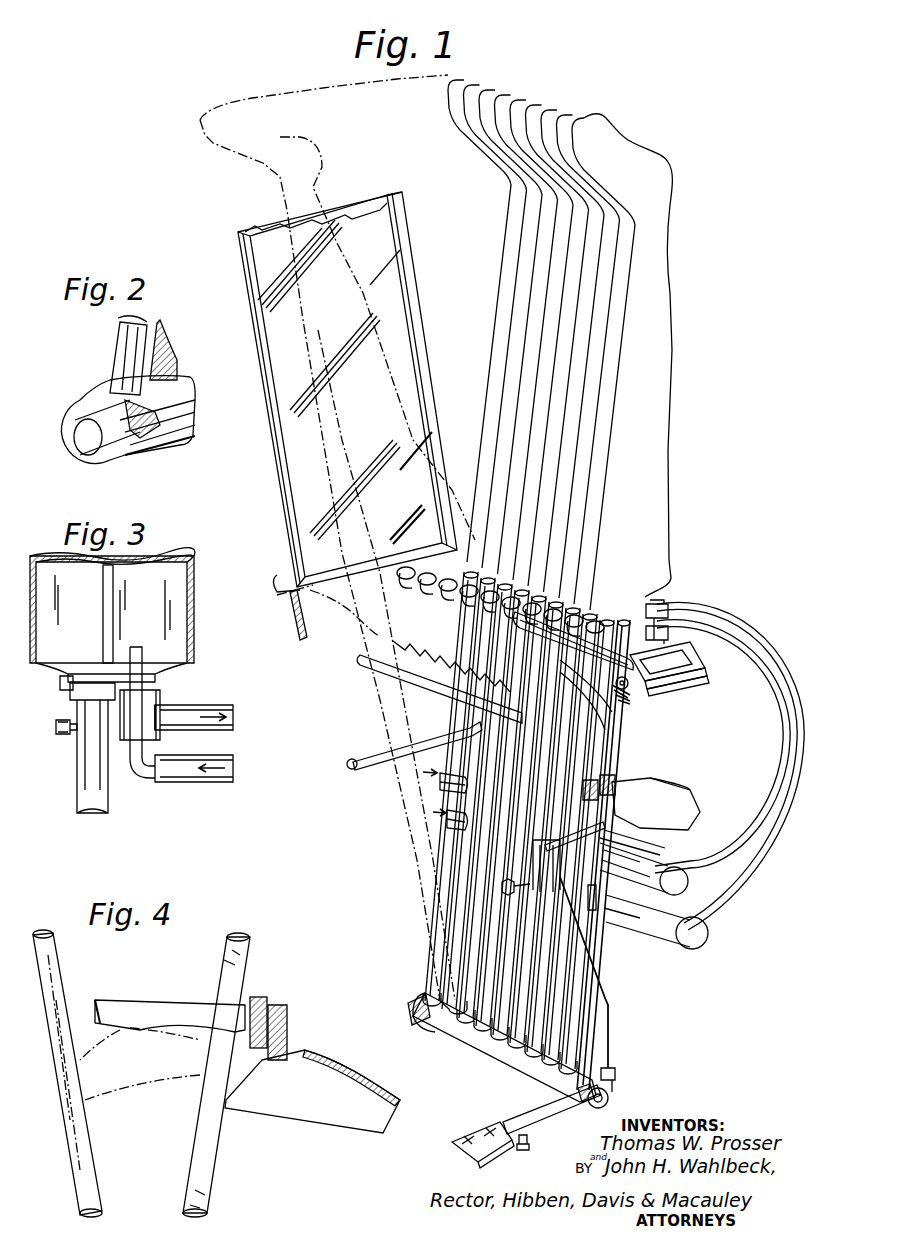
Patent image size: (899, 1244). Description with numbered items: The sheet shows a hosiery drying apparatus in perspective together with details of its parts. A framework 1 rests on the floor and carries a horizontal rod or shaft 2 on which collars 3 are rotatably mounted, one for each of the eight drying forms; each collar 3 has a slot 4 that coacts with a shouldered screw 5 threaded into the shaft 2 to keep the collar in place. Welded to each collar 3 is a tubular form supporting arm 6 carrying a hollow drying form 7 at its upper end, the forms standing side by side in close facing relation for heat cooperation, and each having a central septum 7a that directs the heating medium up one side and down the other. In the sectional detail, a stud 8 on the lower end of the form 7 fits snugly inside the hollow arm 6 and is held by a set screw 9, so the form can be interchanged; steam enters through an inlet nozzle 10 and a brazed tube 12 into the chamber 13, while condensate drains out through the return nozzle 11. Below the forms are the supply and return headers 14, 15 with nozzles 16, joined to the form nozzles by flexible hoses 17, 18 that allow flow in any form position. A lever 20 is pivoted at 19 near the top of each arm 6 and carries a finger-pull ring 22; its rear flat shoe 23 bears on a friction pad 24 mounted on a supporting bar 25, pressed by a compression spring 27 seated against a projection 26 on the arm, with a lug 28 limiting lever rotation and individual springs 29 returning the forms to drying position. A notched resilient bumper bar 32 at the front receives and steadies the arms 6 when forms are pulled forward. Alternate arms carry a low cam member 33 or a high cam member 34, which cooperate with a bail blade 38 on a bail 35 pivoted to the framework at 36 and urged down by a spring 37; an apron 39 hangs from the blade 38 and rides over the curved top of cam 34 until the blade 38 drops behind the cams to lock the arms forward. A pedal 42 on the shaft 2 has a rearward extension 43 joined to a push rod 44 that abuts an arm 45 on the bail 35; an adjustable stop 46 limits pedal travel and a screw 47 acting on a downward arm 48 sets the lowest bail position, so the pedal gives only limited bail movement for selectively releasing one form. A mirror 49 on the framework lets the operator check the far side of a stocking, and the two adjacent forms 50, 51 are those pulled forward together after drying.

In FIG. 1, the framework 1 is at (608, 1102).
In FIG. 1, the rod or shaft 2 is at (620, 1090).
In FIG. 1, the collar 3 is at (545, 1110).
In FIG. 2, the slot 4 is at (183, 392).
In FIG. 2, the shouldered screw 5 is at (165, 440).
In FIG. 1, the form supporting arm 6 is at (596, 958).
In FIG. 4, the form supporting arm 6 is at (215, 1148).
In FIG. 1, the drying form 7 is at (668, 540).
In FIG. 3, the drying form 7 is at (194, 625).
In FIG. 3, the septum 7a is at (62, 684).
In FIG. 3, the stud 8 is at (78, 760).
In FIG. 3, the set screw 9 is at (56, 727).
In FIG. 3, the inlet nozzle 10 is at (162, 783).
In FIG. 3, the return nozzle 11 is at (180, 705).
In FIG. 3, the tube 12 is at (138, 648).
In FIG. 3, the chamber 13 is at (194, 580).
In FIG. 1, the supply header 14 is at (660, 855).
In FIG. 1, the return header 15 is at (660, 925).
In FIG. 1, the nozzle 16 is at (683, 878).
In FIG. 1, the flexible conduit or hose 17 is at (778, 762).
In FIG. 1, the flexible conduit or hose 18 is at (800, 766).
In FIG. 1, the pivot 19 is at (615, 715).
In FIG. 1, the lever 20 is at (607, 732).
In FIG. 1, the loop or ring 22 is at (518, 650).
In FIG. 1, the flat shoe 23 is at (668, 660).
In FIG. 1, the pad 24 is at (700, 672).
In FIG. 1, the supporting bar 25 is at (690, 690).
In FIG. 1, the projection 26 is at (665, 640).
In FIG. 1, the compression spring 27 is at (700, 656).
In FIG. 1, the lug 28 is at (632, 692).
In FIG. 1, the spring 29 is at (665, 700).
In FIG. 1, the bumper bar 32 is at (452, 700).
In FIG. 1, the cam member 33 is at (685, 810).
In FIG. 4, the cam member 33 is at (340, 1120).
In FIG. 1, the cam member 34 is at (672, 788).
In FIG. 4, the cam member 34 is at (396, 1096).
In FIG. 1, the bail 35 is at (370, 767).
In FIG. 4, the bail 35 is at (165, 1005).
In FIG. 1, the bail pivot 36 is at (352, 758).
In FIG. 1, the spring 37 is at (594, 892).
In FIG. 1, the bail blade 38 is at (600, 792).
In FIG. 4, the bail blade 38 is at (265, 1000).
In FIG. 1, the apron 39 is at (614, 784).
In FIG. 4, the apron 39 is at (290, 1025).
In FIG. 1, the pedal 42 is at (490, 1126).
In FIG. 1, the rearward extension 43 is at (617, 1074).
In FIG. 1, the push rod 44 is at (610, 1012).
In FIG. 1, the arm 45 is at (610, 830).
In FIG. 1, the adjustable stop 46 is at (530, 1146).
In FIG. 1, the screw 47 is at (502, 886).
In FIG. 1, the downwardly extending arm 48 is at (530, 860).
In FIG. 1, the mirror 49 is at (288, 507).
In FIG. 1, the form 50 is at (513, 213).
In FIG. 1, the form 51 is at (528, 248).